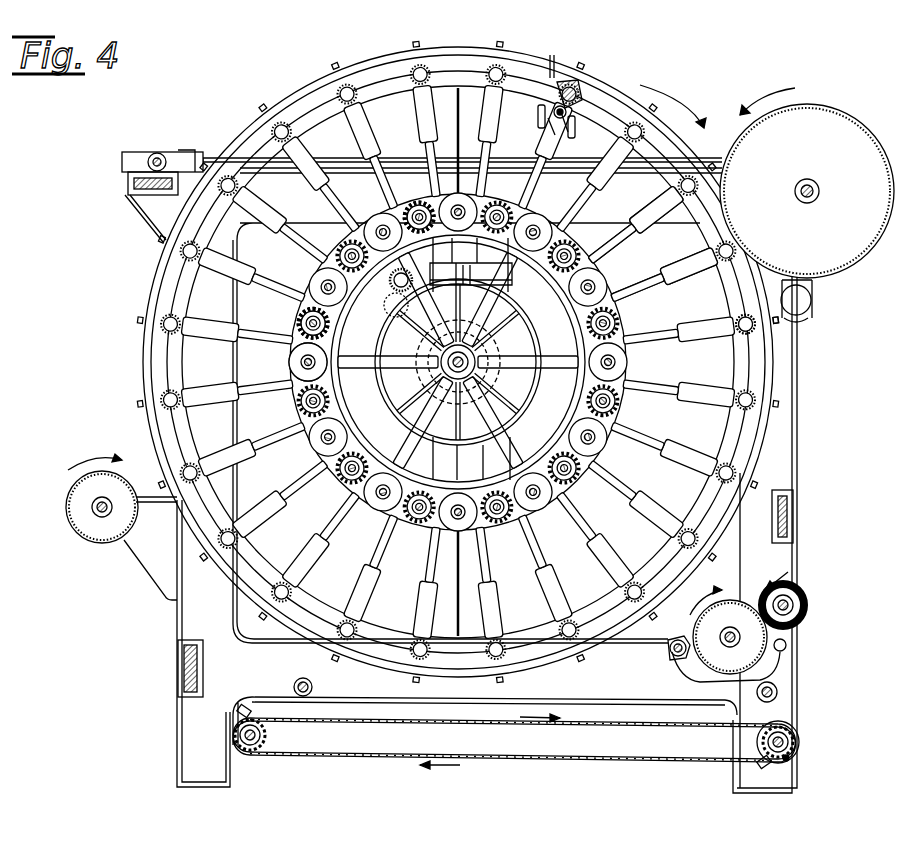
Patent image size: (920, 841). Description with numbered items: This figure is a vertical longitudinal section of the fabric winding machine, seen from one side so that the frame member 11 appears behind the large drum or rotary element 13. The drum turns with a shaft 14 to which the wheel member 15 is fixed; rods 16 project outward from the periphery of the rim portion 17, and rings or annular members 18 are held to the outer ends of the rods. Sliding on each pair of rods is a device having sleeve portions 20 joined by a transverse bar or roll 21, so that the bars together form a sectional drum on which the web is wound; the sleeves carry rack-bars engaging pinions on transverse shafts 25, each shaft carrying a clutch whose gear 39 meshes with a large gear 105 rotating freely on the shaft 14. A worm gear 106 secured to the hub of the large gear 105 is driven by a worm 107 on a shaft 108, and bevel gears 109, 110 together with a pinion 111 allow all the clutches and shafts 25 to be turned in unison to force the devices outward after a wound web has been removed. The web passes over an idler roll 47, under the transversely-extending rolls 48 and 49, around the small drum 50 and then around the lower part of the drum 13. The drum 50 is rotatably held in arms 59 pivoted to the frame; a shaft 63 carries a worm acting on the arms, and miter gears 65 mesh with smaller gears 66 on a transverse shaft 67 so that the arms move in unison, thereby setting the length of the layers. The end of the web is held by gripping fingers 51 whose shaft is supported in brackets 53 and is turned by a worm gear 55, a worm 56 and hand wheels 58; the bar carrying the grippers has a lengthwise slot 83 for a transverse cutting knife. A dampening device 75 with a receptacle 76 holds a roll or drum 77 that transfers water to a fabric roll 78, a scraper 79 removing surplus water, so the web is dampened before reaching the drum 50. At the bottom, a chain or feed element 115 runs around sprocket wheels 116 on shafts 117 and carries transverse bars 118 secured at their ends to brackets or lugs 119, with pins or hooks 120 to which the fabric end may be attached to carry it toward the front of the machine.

The frame member 11 is at (215, 667).
The drum or rotary element 13 is at (395, 66).
The shaft 14 is at (478, 362).
The wheel member 15 is at (388, 370).
The rods 16 is at (632, 190).
The rim portion 17 is at (625, 398).
The rings or annular members 18 is at (150, 283).
The sleeve portion 20 is at (676, 318).
The bar, rod or roll 21 is at (245, 188).
The transversely-extending shaft 25 is at (292, 364).
The gear 39 is at (300, 400).
The idler roll 47 is at (103, 545).
The transversely-extending roll 48 is at (313, 686).
The transversely-extending roll 49 is at (778, 693).
The small drum 50 is at (880, 255).
The gripping fingers 51 is at (585, 100).
The brackets 53 is at (553, 75).
The worm gear 55 is at (556, 104).
The worm 56 is at (550, 125).
The hand wheels 58 is at (538, 112).
The arms 59 is at (814, 300).
The longitudinally-extending shaft 63 is at (350, 158).
The miter gears 65 is at (182, 150).
The smaller gears 66 is at (158, 153).
The transversely-extending shaft 67 is at (150, 160).
The dampening device 75 is at (728, 625).
The receptacle 76 is at (770, 668).
The roll or drum 77 is at (748, 600).
The fabric roll 78 is at (808, 615).
The scraper 79 is at (678, 660).
The slot 83 is at (570, 82).
The large gear 105 is at (540, 370).
The worm gear 106 is at (522, 335).
The worm 107 is at (460, 252).
The shaft 108 is at (508, 290).
The bevel gear 109 is at (400, 316).
The bevel gear 110 is at (412, 212).
The pinion 111 is at (394, 286).
The chain or feed element 115 is at (580, 765).
The sprocket wheels 116 is at (262, 752).
The shafts 117 is at (272, 733).
The transversely-extending bars 118 is at (790, 760).
The brackets or lugs 119 is at (250, 712).
The pins or hooks 120 is at (252, 705).